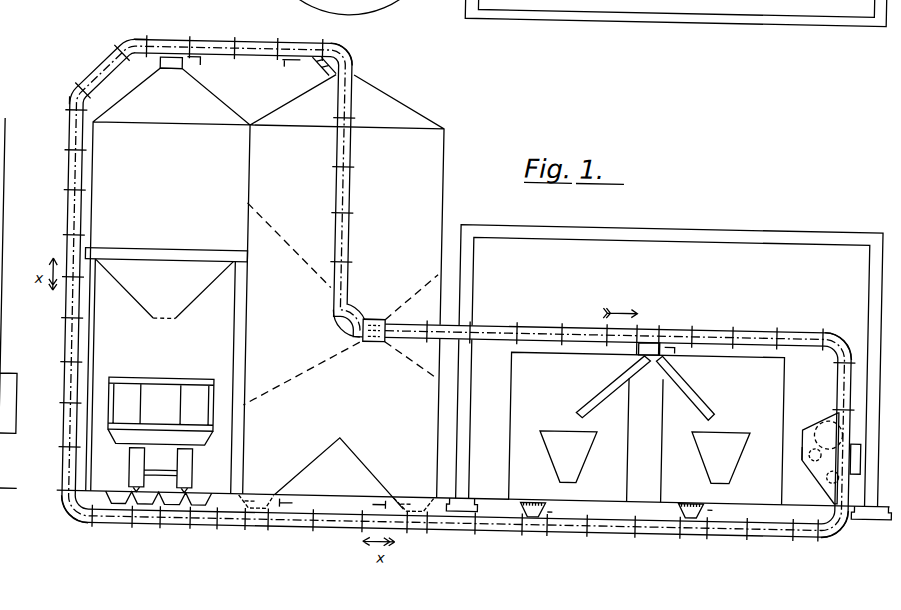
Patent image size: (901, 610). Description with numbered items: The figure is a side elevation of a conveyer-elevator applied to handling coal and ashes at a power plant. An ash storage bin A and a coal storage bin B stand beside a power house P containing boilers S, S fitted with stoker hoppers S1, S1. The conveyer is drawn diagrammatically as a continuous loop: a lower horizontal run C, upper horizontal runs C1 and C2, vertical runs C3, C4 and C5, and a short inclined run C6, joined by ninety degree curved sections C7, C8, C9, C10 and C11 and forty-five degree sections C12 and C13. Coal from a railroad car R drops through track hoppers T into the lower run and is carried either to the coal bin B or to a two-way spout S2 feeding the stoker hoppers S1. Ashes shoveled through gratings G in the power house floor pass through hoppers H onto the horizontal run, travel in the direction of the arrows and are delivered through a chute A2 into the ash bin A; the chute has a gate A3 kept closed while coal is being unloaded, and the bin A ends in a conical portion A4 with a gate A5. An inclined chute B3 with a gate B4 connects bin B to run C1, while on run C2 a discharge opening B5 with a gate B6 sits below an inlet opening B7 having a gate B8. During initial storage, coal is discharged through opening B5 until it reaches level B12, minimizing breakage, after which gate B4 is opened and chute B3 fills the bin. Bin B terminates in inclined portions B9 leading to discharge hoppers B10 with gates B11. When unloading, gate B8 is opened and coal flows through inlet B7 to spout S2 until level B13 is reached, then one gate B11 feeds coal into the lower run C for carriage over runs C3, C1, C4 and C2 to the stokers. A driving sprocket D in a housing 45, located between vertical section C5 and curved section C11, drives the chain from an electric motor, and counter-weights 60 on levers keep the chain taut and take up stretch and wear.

The ash storage bin A is at (166, 280).
The chute A2 is at (165, 75).
The gate A3 is at (186, 66).
The conical portion A4 is at (134, 308).
The gate A5 is at (185, 323).
The railroad car R is at (161, 411).
The track hoppers T is at (125, 501).
The coal storage bin B is at (344, 285).
The inclined chute B3 is at (321, 69).
The gate B4 is at (279, 70).
The discharge opening B5 is at (375, 345).
The gate B6 is at (398, 341).
The inlet opening B7 is at (375, 320).
The gate B8 is at (400, 319).
The inclined portions B9 is at (325, 451).
The discharge hoppers B10 is at (261, 509).
The gates B11 is at (332, 508).
The coal level B12 is at (301, 373).
The coal level B13 is at (289, 245).
The lower horizontal run C is at (443, 531).
The upper horizontal run C1 is at (252, 44).
The upper horizontal run C2 is at (500, 327).
The vertical run C3 is at (65, 190).
The vertical run C4 is at (349, 205).
The vertical run C5 is at (841, 384).
The short inclined run C6 is at (94, 77).
The curved section C7 is at (85, 507).
The curved section C8 is at (346, 50).
The curved section C9 is at (345, 322).
The curved section C10 is at (838, 339).
The curved section C11 is at (844, 522).
The forty-five degree section C12 is at (65, 112).
The forty-five degree section C13 is at (131, 46).
The power house P is at (671, 372).
The boilers S is at (647, 428).
The stoker hoppers S1 is at (555, 430).
The two-way spout S2 is at (679, 392).
The gratings G is at (535, 500).
The hoppers H is at (635, 515).
The driving sprocket D is at (825, 419).
The housing 45 is at (804, 450).
The counter-weights 60 is at (853, 452).